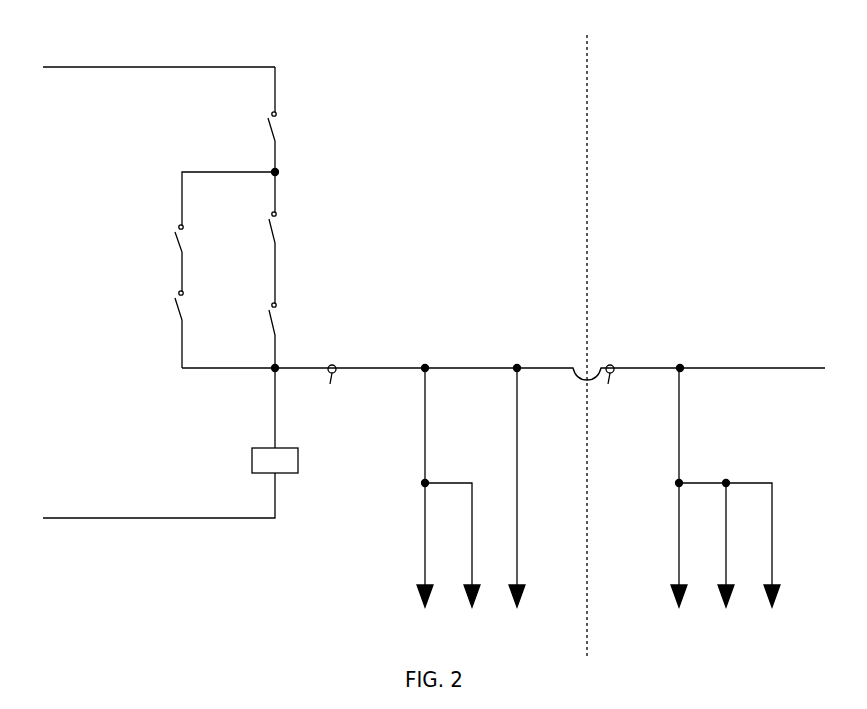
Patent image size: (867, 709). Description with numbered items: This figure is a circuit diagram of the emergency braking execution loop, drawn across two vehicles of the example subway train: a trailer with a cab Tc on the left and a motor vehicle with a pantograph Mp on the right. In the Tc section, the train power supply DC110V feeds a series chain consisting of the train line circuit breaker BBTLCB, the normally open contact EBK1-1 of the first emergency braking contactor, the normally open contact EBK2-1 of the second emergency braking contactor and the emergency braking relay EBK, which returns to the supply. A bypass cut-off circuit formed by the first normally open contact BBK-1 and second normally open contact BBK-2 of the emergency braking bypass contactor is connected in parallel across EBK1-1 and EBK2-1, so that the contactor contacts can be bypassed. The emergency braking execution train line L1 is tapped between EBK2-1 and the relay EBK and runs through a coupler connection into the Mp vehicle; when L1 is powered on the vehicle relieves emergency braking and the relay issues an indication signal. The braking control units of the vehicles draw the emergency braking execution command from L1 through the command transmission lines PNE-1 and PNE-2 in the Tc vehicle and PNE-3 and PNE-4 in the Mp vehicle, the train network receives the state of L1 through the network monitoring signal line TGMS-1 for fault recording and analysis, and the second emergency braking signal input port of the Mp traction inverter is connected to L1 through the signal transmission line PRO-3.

The DC 110V power supply line DC110V is at (159, 59).
The trailer with a cab Tc is at (306, 29).
The motor vehicle with a pantograph Mp is at (728, 32).
The circuit breaker BBTLCB is at (244, 119).
The first normally open contact of the emergency braking bypass contactor BBK-1 is at (156, 256).
The second normally open contact of the emergency braking bypass contactor BBK-2 is at (156, 329).
The normally open contact of the first emergency braking contactor EBK1-1 is at (244, 238).
The normally open contact of the second emergency braking contactor EBK2-1 is at (244, 334).
The emergency brake relay coil EBK is at (170, 443).
The emergency braking execution train line L1 is at (550, 361).
The emergency braking execution command transmission line PNE-1 is at (408, 501).
The emergency braking execution command transmission line PNE-2 is at (461, 559).
The train monitoring system 1 TGMS-1 is at (540, 501).
The emergency braking execution command transmission line PNE-3 is at (660, 501).
The emergency braking execution command transmission line PNE-4 is at (713, 558).
The emergency braking execution signal transmission line PRO-3 is at (769, 559).